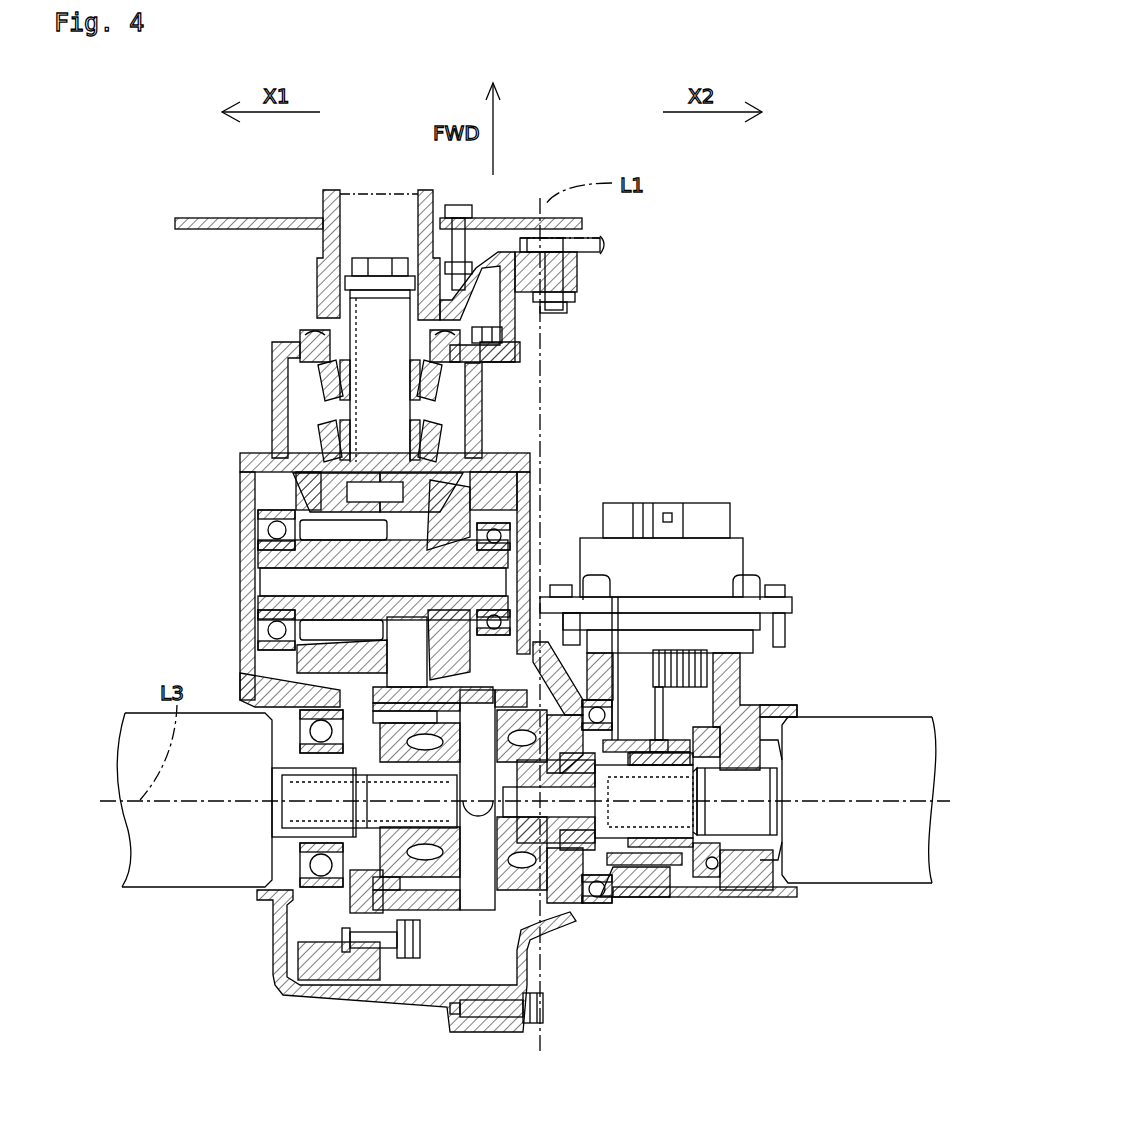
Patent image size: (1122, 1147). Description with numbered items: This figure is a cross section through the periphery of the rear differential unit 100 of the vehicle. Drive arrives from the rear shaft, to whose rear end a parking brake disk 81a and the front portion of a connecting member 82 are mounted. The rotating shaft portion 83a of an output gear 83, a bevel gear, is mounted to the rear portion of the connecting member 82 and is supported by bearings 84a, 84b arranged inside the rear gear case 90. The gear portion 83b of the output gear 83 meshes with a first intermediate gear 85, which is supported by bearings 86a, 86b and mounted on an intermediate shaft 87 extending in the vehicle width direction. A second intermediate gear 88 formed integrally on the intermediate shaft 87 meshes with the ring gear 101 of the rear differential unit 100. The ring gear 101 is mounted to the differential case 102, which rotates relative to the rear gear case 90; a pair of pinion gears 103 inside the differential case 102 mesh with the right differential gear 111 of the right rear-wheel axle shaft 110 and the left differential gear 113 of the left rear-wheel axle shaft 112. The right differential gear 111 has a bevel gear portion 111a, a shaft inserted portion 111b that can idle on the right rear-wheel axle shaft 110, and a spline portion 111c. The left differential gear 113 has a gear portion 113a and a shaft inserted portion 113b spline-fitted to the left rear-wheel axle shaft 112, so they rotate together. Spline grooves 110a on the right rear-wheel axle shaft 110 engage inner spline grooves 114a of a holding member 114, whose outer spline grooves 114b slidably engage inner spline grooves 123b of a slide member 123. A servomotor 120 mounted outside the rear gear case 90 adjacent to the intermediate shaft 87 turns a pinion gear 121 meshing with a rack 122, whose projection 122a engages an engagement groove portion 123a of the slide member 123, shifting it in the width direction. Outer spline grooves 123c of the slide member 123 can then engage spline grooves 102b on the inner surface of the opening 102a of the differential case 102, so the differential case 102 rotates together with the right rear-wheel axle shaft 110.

The parking brake disk 81a is at (240, 232).
The connecting member 82 is at (323, 285).
The output gear 83 is at (362, 388).
The rotating shaft portion 83a is at (300, 347).
The gear portion 83b is at (305, 483).
The bearing 84a is at (460, 375).
The bearing 84b is at (482, 432).
The first intermediate gear 85 is at (472, 484).
The bearing 86a is at (512, 530).
The bearing 86b is at (260, 545).
The intermediate shaft 87 is at (260, 600).
The second intermediate gear 88 is at (317, 528).
The rear gear case 90 is at (272, 438).
The rear differential unit 100 is at (452, 918).
The ring gear 101 is at (393, 685).
The differential case 102 is at (580, 935).
The opening 102a is at (623, 907).
The spline grooves 102b is at (644, 859).
The pinion gear 103 is at (405, 690).
The right rear-wheel axle shaft 110 is at (727, 888).
The spline grooves 110a is at (767, 705).
The right differential gear 111 is at (590, 907).
The gear portion 111a is at (575, 895).
The shaft inserted portion 111b is at (681, 812).
The spline portion 111c is at (625, 918).
The left rear-wheel axle shaft 112 is at (390, 805).
The left differential gear 113 is at (347, 880).
The gear portion 113a is at (400, 925).
The shaft inserted portion 113b is at (420, 855).
The holding member 114 is at (758, 890).
The inner spline grooves 114a is at (713, 792).
The outer spline grooves 114b is at (730, 720).
The servomotor 120 is at (700, 547).
The pinion gear 121 is at (678, 643).
The rack 122 is at (705, 650).
The projection 122a is at (670, 657).
The slide member 123 is at (700, 878).
The engagement groove portion 123a is at (640, 735).
The inner spline grooves 123b is at (672, 750).
The outer spline grooves 123c is at (615, 700).